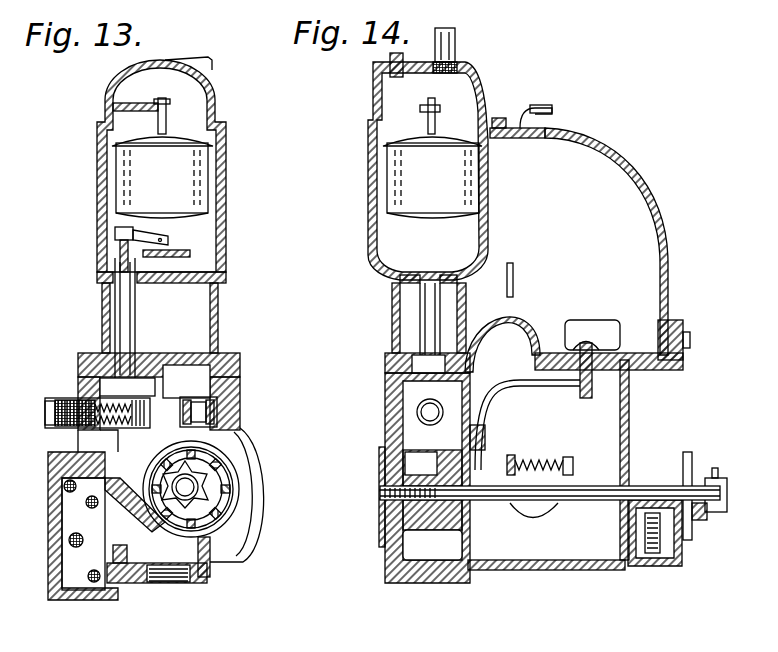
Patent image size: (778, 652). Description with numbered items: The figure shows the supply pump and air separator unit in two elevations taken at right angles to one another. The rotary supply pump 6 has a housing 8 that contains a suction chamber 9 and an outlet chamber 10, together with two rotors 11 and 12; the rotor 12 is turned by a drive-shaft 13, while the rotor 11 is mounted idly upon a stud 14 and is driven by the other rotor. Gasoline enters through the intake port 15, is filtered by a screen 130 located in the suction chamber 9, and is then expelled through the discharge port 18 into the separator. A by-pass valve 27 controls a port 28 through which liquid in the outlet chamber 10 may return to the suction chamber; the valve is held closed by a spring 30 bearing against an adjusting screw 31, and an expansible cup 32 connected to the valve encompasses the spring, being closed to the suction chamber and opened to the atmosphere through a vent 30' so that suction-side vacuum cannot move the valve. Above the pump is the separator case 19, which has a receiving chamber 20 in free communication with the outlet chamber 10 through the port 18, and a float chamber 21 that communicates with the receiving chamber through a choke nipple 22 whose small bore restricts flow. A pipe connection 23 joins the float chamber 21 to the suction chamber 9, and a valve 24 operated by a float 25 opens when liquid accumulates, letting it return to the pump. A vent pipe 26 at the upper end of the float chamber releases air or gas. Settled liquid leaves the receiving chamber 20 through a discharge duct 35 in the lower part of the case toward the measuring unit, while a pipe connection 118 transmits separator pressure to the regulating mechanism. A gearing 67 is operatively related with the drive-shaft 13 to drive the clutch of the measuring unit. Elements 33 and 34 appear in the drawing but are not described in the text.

In FIG. 13, the supply pump 6 is at (225, 438).
In FIG. 14, the supply pump 6 is at (385, 398).
In FIG. 13, the housing 8 is at (243, 485).
In FIG. 14, the housing 8 is at (431, 584).
In FIG. 13, the suction chamber 9 is at (135, 499).
In FIG. 14, the suction chamber 9 is at (432, 545).
In FIG. 13, the outlet chamber 10 is at (186, 381).
In FIG. 14, the outlet chamber 10 is at (417, 383).
In FIG. 13, the rotor 11 is at (160, 478).
In FIG. 14, the rotor 11 is at (421, 463).
In FIG. 13, the rotor 12 is at (222, 494).
In FIG. 14, the rotor 12 is at (417, 441).
In FIG. 13, the drive-shaft 13 is at (218, 505).
In FIG. 14, the drive-shaft 13 is at (576, 500).
In FIG. 13, the stud 14 is at (181, 496).
In FIG. 14, the stud 14 is at (380, 488).
In FIG. 13, the intake port 15 is at (155, 583).
In FIG. 13, the discharge port 18 is at (195, 360).
In FIG. 14, the discharge port 18 is at (414, 356).
In FIG. 14, the case 19 is at (627, 192).
In FIG. 13, the receiving chamber 20 is at (172, 305).
In FIG. 14, the receiving chamber 20 is at (572, 243).
In FIG. 13, the float chamber 21 is at (160, 114).
In FIG. 14, the float chamber 21 is at (440, 105).
In FIG. 14, the choke nipple 22 is at (502, 138).
In FIG. 13, the pipe connection 23 is at (136, 322).
In FIG. 14, the pipe connection 23 is at (438, 300).
In FIG. 13, the valve 24 is at (115, 243).
In FIG. 13, the float 25 is at (162, 177).
In FIG. 14, the float 25 is at (432, 177).
In FIG. 14, the vent pipe 26 is at (457, 44).
In FIG. 13, the by-pass valve 27 is at (118, 432).
In FIG. 13, the port 28 is at (145, 400).
In FIG. 14, the port 28 is at (430, 412).
In FIG. 13, the spring 30 is at (68, 377).
In FIG. 13, the vent 30' is at (50, 440).
In FIG. 13, the adjusting screw 31 is at (50, 400).
In FIG. 13, the expansible cup 32 is at (108, 450).
In FIG. 13, the plunger 33 is at (212, 404).
In FIG. 13, the plunger seat 34 is at (208, 418).
In FIG. 14, the discharge duct 35 is at (600, 320).
In FIG. 14, the gearing 67 is at (654, 562).
In FIG. 14, the pipe connection 118 is at (545, 120).
In FIG. 13, the screen 130 is at (68, 526).